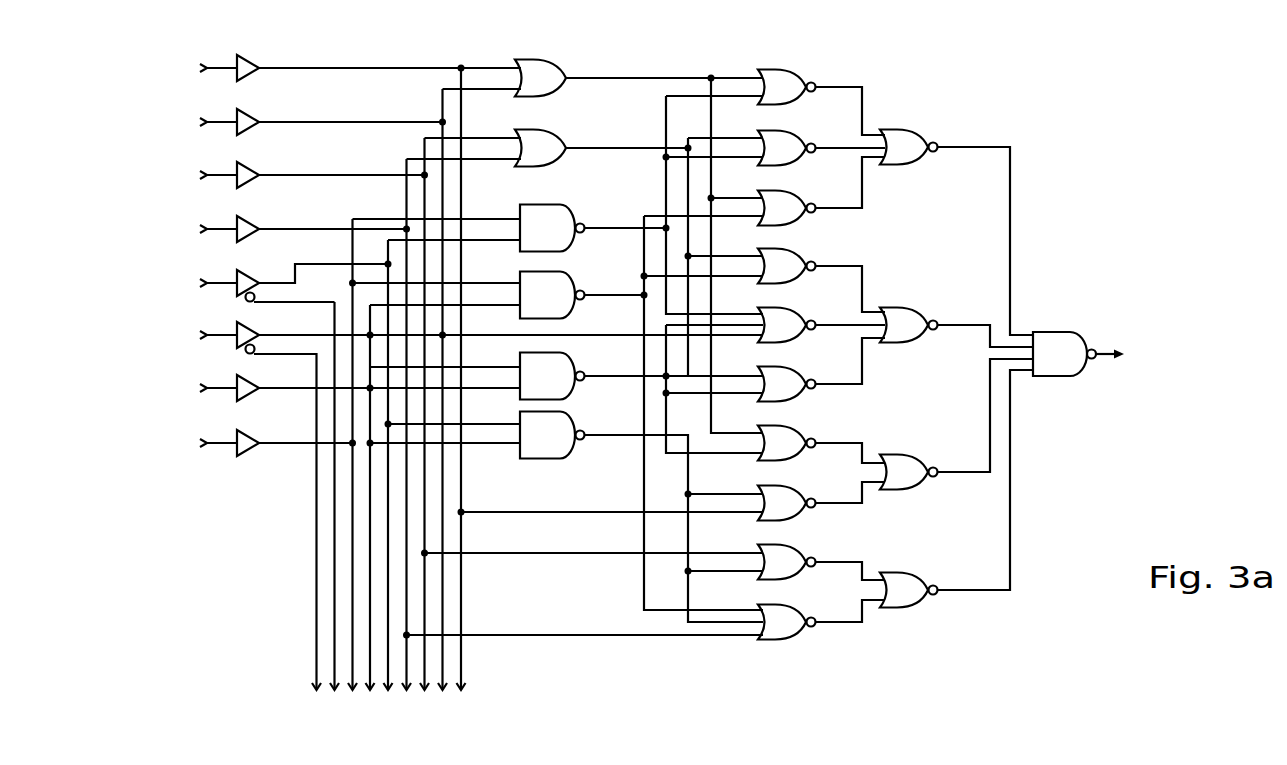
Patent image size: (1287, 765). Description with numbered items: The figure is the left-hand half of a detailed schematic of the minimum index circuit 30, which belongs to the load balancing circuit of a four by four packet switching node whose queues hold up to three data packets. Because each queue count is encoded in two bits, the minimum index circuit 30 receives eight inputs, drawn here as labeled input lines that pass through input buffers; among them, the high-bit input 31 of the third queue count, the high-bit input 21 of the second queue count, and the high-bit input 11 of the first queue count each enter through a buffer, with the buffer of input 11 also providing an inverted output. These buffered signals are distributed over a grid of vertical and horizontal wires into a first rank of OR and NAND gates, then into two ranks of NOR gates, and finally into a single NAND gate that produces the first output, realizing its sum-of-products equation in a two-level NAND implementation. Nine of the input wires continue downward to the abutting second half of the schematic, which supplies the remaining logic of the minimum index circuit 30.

The minimum index circuit 30 is at (1091, 145).
The input L31 buffer (signal label L31) 31 is at (304, 68).
The input L21 buffer (signal label L21) 21 is at (286, 175).
The input L11 buffer (signal label L11) 11 is at (268, 283).